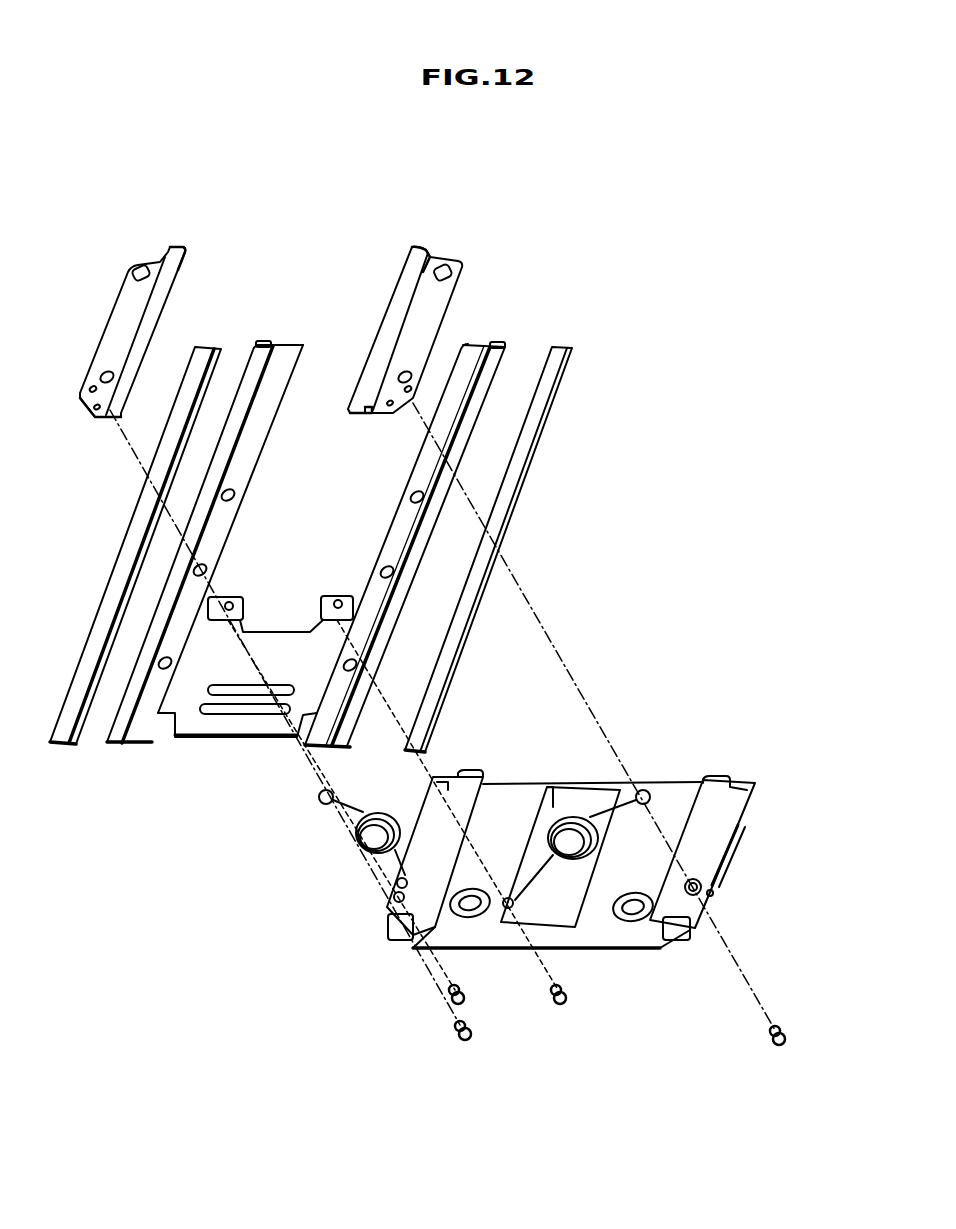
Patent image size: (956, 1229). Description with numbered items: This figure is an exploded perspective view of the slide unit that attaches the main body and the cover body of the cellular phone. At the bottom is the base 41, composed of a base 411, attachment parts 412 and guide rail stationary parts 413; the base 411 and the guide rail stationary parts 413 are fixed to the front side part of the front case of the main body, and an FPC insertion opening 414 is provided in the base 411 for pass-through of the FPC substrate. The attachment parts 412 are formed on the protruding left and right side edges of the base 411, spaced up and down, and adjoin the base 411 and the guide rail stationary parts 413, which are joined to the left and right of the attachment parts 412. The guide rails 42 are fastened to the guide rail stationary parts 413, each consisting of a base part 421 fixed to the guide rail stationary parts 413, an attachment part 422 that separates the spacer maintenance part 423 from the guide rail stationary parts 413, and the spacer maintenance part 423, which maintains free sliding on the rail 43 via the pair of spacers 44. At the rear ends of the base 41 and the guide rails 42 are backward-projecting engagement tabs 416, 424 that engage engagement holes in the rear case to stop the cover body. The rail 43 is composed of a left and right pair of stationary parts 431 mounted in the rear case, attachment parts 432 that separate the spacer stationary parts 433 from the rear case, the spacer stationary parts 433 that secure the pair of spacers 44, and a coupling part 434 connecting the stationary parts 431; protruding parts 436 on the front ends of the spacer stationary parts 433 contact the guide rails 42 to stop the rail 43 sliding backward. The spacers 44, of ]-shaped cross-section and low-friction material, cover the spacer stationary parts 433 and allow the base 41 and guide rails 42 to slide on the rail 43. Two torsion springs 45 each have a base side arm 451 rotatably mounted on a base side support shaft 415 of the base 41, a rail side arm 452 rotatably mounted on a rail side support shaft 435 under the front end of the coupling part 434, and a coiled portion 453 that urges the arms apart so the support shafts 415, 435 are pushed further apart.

The base 41 is at (532, 904).
The base 411 is at (462, 943).
The attachment parts 412 is at (432, 812).
The guide rail stationary parts 413 is at (462, 785).
The FPC insertion opening 414 is at (568, 812).
The base side support shafts 415 is at (458, 1040).
The engagement tabs 416 is at (397, 924).
The guide rails 42 is at (301, 313).
The base part 421 is at (118, 320).
The attachment part 422 is at (140, 300).
The spacer maintenance part 423 is at (176, 255).
The engagement tabs 424 is at (109, 418).
The rail 43 is at (304, 679).
The stationary parts 431 is at (137, 735).
The attachment parts 432 is at (125, 742).
The spacer stationary parts 433 is at (110, 738).
The coupling part 434 is at (193, 725).
The rail side support shafts 435 is at (463, 995).
The protruding parts 436 is at (263, 343).
The spacers 44 is at (122, 555).
The torsion springs 45 is at (456, 930).
The base side arms 451 is at (343, 812).
The rail side arms 452 is at (452, 940).
The coiled portions 453 is at (355, 840).